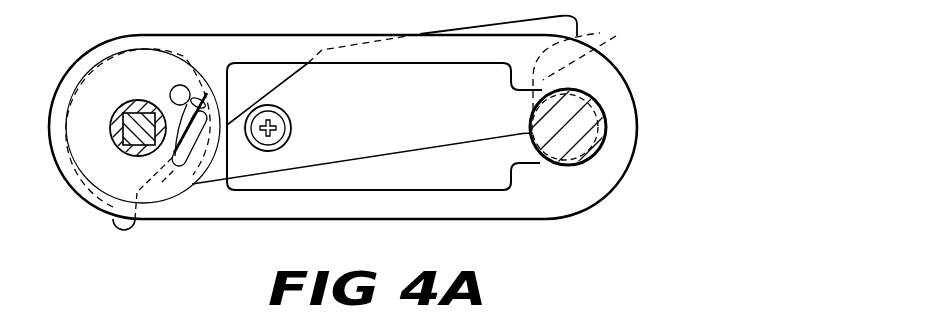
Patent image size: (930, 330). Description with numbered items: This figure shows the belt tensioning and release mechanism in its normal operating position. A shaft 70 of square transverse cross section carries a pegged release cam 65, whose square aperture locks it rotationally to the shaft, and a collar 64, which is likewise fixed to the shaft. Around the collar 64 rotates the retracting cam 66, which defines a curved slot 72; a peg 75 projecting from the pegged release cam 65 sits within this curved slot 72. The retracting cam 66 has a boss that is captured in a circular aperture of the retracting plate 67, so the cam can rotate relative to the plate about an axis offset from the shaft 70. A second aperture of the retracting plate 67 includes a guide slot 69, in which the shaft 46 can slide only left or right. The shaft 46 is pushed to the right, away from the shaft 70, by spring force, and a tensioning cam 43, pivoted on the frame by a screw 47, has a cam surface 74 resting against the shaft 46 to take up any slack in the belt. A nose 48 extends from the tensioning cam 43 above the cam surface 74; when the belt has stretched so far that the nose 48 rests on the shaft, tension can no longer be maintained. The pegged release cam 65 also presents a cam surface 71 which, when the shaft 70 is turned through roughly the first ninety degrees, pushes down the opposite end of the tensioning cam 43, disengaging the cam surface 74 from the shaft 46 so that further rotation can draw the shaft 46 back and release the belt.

The tensioning cam 43 is at (381, 147).
The shaft 46 is at (567, 100).
The screw 47 is at (273, 108).
The nose 48 is at (578, 25).
The collar 64 is at (115, 118).
The pegged release cam 65 is at (76, 190).
The retracting cam 66 is at (163, 195).
The retracting plate 67 is at (292, 40).
The guide slot 69 is at (520, 158).
The shaft 70 is at (133, 153).
The cam surface 71 is at (196, 133).
The curved slot 72 is at (203, 88).
The cam surface 74 is at (615, 37).
The peg 75 is at (171, 93).